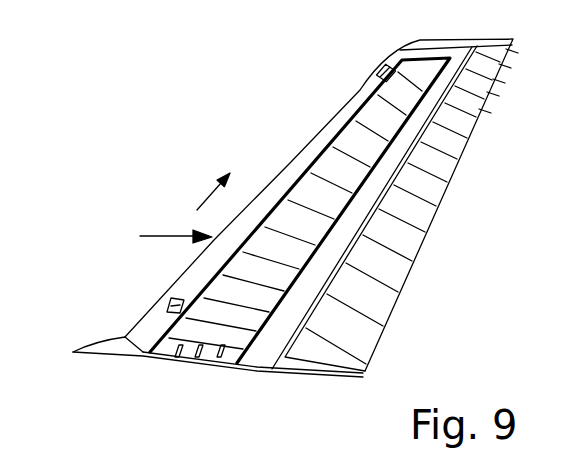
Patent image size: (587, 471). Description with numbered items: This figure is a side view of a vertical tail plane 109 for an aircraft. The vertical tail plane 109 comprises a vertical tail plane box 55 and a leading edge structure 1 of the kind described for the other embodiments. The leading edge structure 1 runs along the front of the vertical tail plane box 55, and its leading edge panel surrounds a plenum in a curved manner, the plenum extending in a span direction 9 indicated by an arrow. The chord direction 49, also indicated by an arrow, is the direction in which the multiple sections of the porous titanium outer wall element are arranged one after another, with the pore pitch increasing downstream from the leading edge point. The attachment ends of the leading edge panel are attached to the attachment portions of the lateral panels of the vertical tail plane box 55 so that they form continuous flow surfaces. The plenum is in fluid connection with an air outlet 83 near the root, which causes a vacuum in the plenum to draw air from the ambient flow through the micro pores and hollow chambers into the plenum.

The vertical tail plane 109 is at (282, 192).
The leading edge structure 1 is at (282, 208).
The span direction 9 is at (209, 195).
The chord direction 49 is at (155, 236).
The air outlet 83 is at (166, 302).
The vertical tail plane box 55 is at (278, 300).